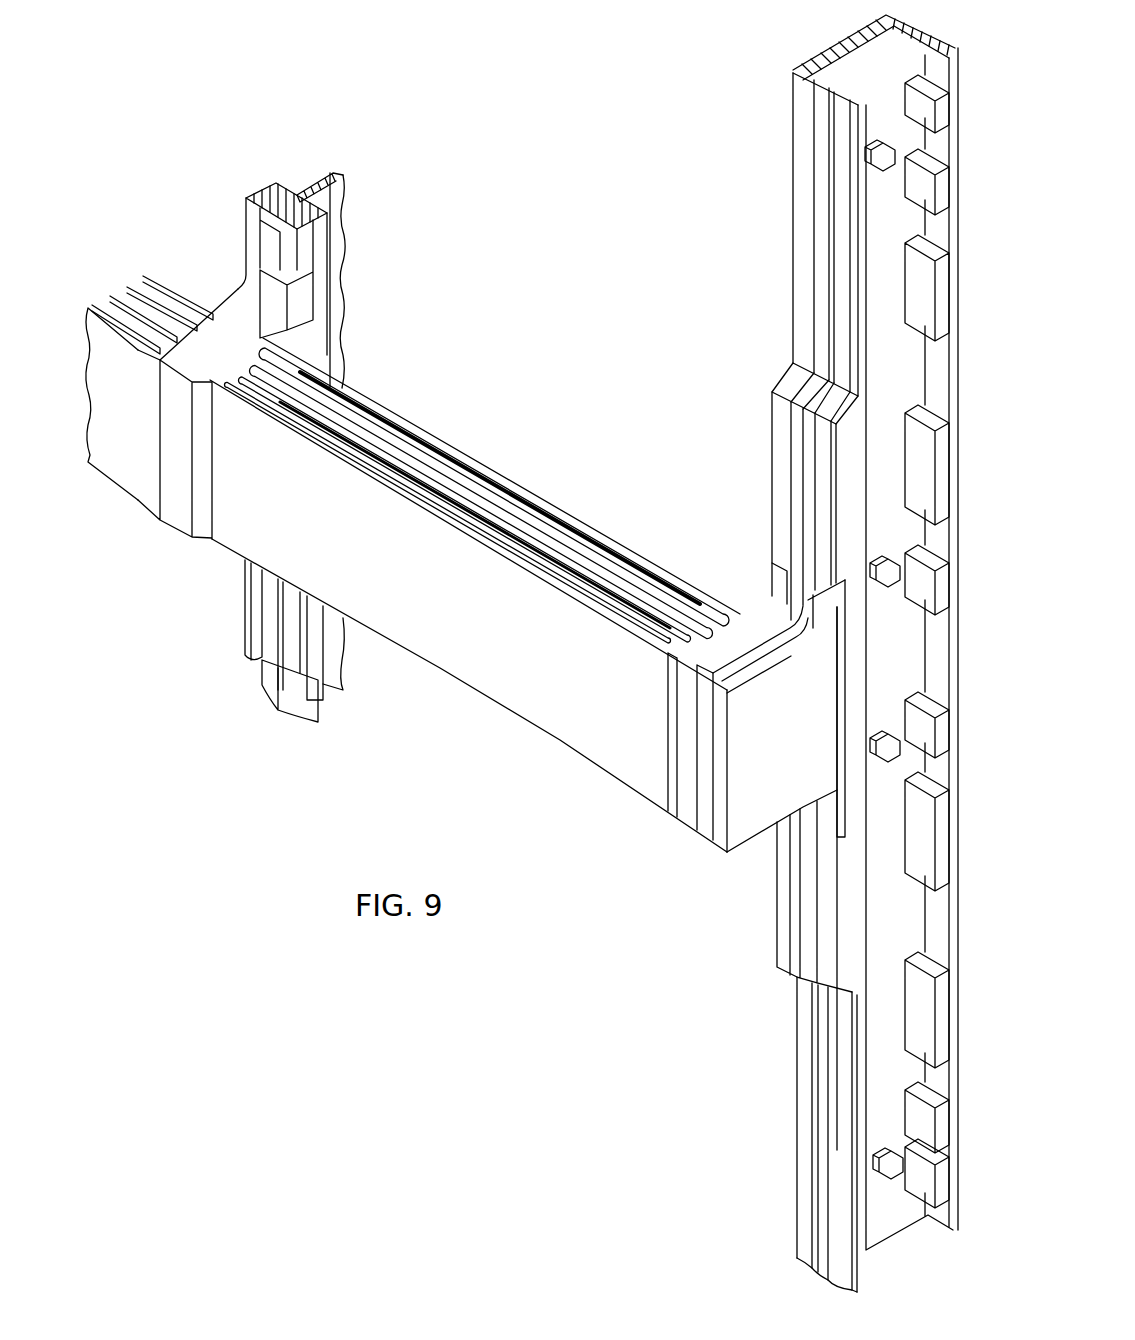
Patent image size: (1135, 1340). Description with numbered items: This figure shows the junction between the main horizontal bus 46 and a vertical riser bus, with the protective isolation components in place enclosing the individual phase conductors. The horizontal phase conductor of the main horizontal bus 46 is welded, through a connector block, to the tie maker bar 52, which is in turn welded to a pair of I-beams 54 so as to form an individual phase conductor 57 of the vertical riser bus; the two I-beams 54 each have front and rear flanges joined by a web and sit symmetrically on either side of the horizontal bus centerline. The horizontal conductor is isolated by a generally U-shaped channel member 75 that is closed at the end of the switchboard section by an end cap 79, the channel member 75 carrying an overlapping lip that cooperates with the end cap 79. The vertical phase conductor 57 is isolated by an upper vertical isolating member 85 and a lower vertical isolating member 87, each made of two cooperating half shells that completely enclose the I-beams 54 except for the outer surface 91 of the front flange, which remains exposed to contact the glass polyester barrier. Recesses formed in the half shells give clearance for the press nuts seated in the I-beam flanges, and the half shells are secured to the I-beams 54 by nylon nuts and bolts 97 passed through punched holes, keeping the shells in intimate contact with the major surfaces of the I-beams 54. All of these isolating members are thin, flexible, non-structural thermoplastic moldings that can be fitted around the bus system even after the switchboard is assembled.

The main horizontal bus 46 is at (120, 522).
The tie maker bar 52 is at (267, 203).
The I-beams 54 is at (323, 178).
The individual phase conductor of the vertical riser bus 57 is at (822, 35).
The channel member 75 is at (483, 677).
The end cap 79 is at (760, 820).
The upper vertical isolating member 85 is at (818, 128).
The lower vertical isolating member 87 is at (822, 1202).
The outer surface of the front flange 91 is at (938, 44).
The nylon nuts and bolts 97 is at (890, 150).